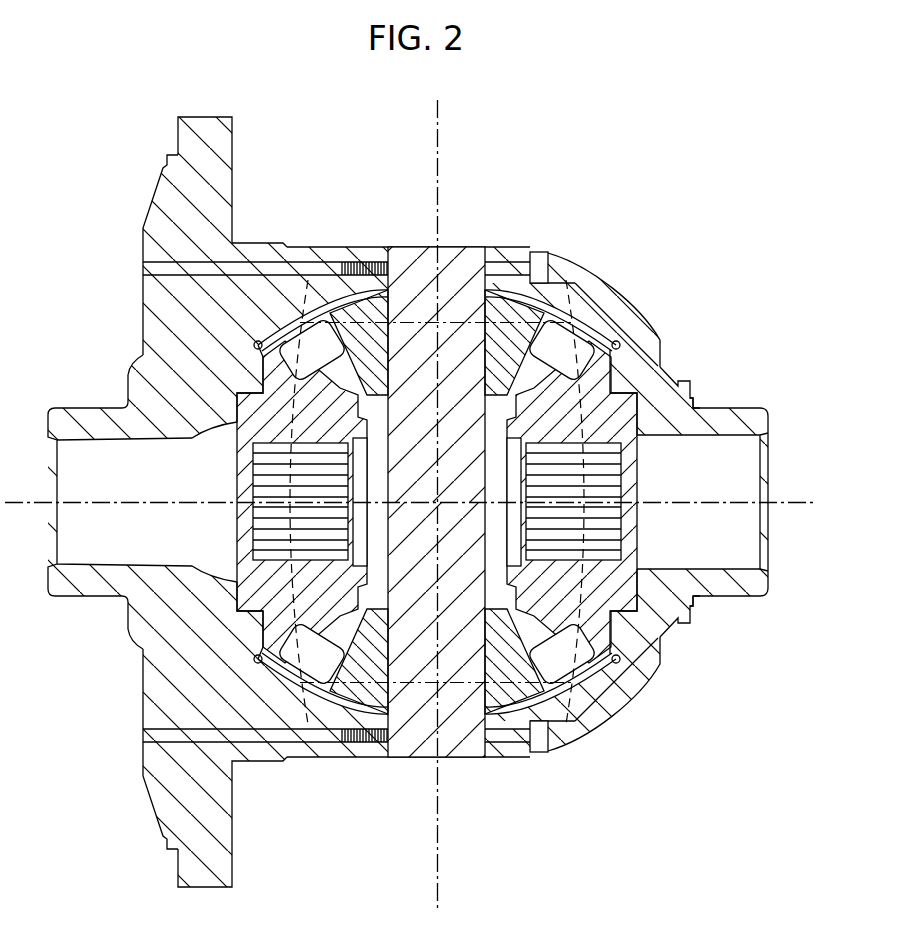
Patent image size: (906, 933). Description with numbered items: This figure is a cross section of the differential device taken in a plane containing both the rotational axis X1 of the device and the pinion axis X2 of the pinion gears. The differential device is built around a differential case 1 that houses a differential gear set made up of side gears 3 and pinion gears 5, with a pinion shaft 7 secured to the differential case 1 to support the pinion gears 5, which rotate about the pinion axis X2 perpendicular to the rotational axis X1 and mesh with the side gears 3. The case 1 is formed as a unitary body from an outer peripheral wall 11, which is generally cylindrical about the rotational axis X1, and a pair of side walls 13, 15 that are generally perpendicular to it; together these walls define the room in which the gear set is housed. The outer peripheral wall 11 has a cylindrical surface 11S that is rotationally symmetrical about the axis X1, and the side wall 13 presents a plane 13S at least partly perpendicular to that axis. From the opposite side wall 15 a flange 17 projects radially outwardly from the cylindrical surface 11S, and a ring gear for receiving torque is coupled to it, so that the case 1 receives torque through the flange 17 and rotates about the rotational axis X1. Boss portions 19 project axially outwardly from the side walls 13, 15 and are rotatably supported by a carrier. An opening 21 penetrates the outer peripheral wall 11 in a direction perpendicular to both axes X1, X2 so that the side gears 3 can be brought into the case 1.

The differential case 1 is at (453, 466).
The side gear 3 is at (253, 426).
The pinion gear 5 is at (497, 396).
The pinion shaft 7 is at (448, 247).
The outer peripheral wall 11 is at (320, 282).
The cylindrical surface 11S is at (512, 245).
The side wall 13 is at (684, 385).
The plane 13S is at (694, 397).
The side wall 15 is at (165, 319).
The flange 17 is at (233, 140).
The boss portion 19 is at (73, 405).
The opening 21 is at (462, 732).
The rotational axis X1 is at (787, 500).
The pinion axis X2 is at (432, 176).